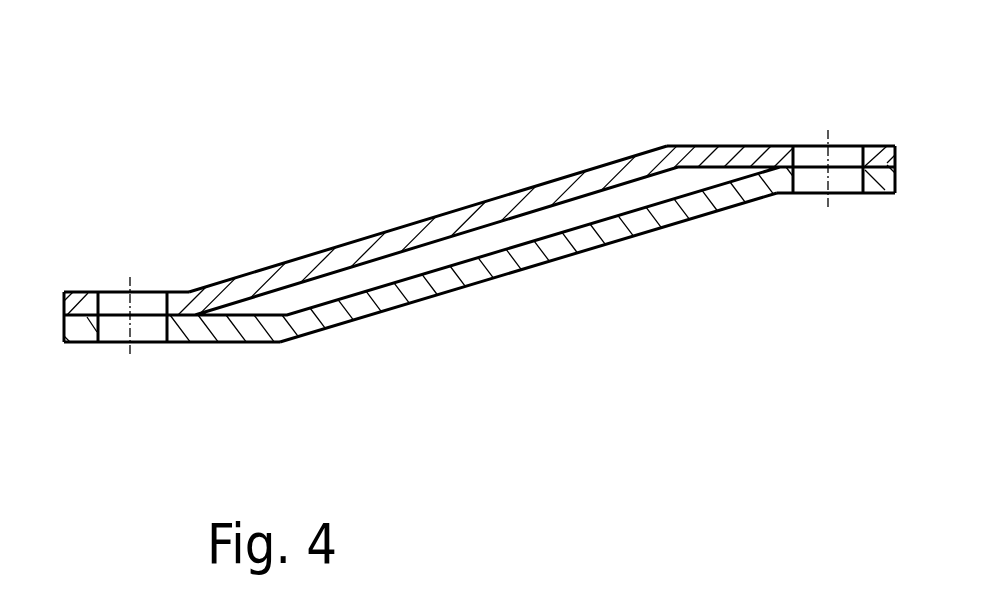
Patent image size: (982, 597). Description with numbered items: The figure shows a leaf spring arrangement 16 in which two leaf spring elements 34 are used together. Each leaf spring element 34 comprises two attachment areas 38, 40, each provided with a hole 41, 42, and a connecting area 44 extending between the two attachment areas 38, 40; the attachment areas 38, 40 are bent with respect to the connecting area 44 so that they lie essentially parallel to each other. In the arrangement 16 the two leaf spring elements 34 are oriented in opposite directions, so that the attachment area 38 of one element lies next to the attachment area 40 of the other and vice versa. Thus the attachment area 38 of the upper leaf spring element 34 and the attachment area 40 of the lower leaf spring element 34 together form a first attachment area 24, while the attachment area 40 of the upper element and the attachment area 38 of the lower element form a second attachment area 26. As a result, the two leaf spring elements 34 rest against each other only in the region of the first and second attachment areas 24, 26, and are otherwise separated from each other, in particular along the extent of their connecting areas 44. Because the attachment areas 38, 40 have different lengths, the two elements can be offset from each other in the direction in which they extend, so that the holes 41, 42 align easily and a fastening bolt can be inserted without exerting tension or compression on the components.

The leaf spring arrangement 16 is at (555, 106).
The first attachment area 24 is at (64, 305).
The second attachment area 26 is at (878, 144).
The leaf spring element 34 is at (456, 204).
The attachment area 38 is at (78, 292).
The attachment area 40 is at (208, 343).
The hole 41 is at (118, 335).
The hole 42 is at (153, 298).
The connecting area 44 is at (357, 247).